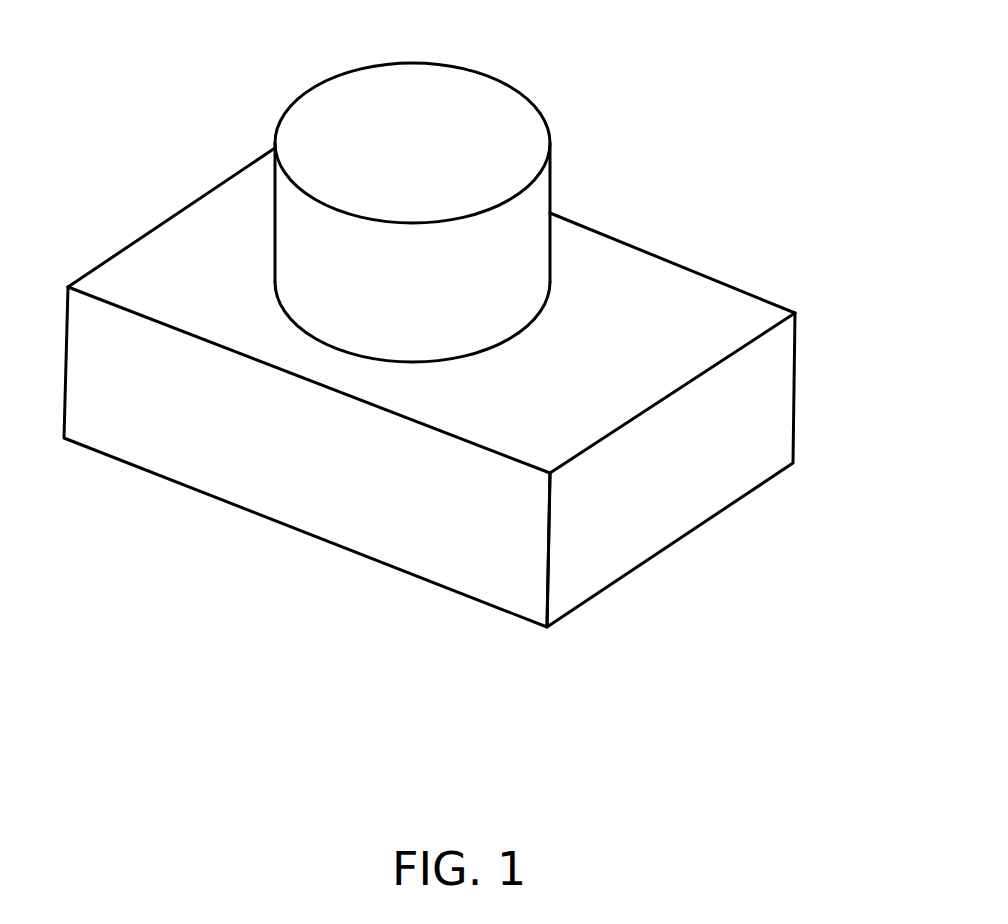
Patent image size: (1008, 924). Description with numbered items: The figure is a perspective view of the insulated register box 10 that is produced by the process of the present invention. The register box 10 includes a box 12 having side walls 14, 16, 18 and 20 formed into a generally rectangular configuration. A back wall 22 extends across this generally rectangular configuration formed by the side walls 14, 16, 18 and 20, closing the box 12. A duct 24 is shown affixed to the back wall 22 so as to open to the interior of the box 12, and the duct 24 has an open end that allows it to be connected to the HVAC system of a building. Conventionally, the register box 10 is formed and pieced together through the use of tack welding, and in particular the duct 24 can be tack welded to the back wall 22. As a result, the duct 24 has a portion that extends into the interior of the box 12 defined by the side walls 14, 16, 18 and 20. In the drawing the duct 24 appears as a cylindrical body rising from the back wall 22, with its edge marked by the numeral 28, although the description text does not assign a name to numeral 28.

The insulated register box 10 is at (653, 196).
The box 12 is at (465, 398).
The side wall 14 is at (652, 545).
The side wall 16 is at (463, 573).
The side wall 18 is at (170, 218).
The side wall 20 is at (690, 267).
The back wall 22 is at (431, 308).
The duct 24 is at (444, 209).
The cylinder edge 28 is at (510, 93).